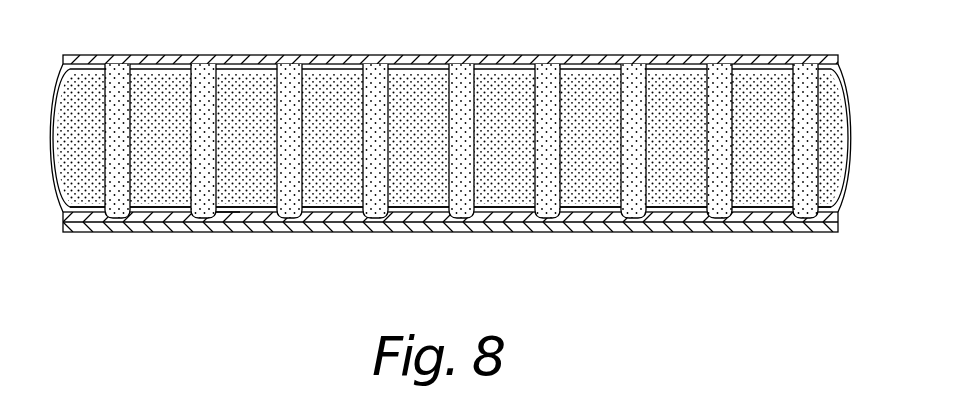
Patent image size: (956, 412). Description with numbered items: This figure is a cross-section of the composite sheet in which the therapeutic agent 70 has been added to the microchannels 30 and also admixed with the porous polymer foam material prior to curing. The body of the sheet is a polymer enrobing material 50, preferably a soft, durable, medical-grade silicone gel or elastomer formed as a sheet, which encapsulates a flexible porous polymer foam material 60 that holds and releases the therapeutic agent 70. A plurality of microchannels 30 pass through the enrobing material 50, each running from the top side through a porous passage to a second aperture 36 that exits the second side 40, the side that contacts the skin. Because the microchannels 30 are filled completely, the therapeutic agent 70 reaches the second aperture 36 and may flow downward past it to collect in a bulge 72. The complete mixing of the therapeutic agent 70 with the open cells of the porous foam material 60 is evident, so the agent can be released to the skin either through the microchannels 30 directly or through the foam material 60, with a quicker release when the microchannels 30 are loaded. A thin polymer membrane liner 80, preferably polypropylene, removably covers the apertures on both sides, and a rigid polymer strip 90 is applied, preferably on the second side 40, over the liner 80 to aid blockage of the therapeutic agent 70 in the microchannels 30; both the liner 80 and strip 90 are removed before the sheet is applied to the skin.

The microchannels 30 is at (378, 96).
The second aperture 36 is at (218, 220).
The second side 40 is at (325, 210).
The polymer enrobing material 50 is at (51, 139).
The flexible porous polymer foam material 60 is at (157, 83).
The therapeutic agent 70 is at (330, 85).
The bulge 72 is at (372, 228).
The thin polymer membrane liner 80 is at (433, 56).
The rigid polymer strip 90 is at (540, 232).